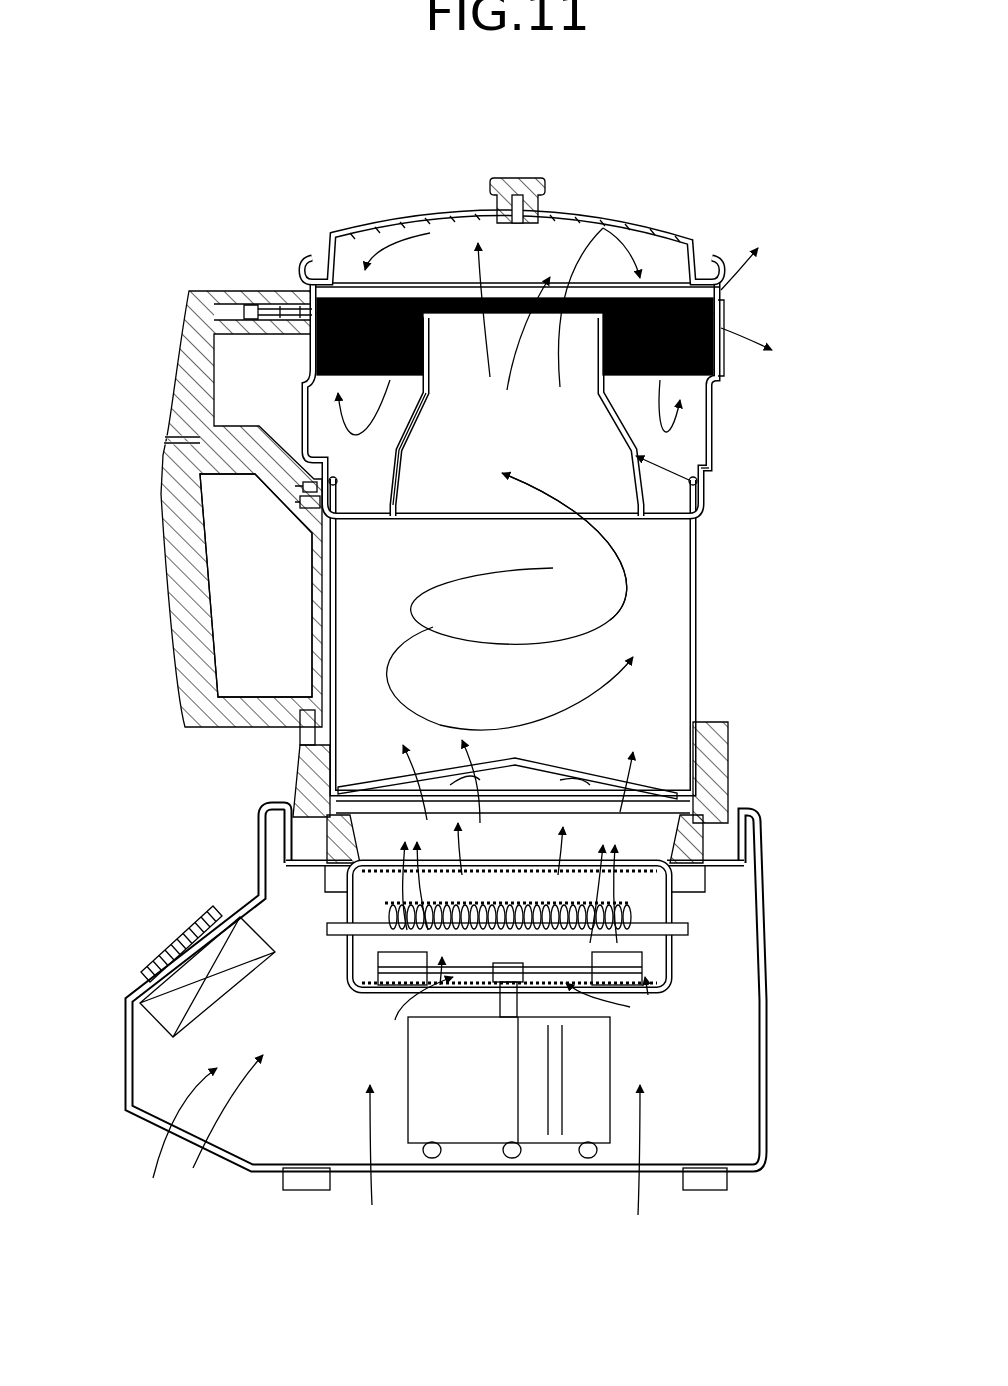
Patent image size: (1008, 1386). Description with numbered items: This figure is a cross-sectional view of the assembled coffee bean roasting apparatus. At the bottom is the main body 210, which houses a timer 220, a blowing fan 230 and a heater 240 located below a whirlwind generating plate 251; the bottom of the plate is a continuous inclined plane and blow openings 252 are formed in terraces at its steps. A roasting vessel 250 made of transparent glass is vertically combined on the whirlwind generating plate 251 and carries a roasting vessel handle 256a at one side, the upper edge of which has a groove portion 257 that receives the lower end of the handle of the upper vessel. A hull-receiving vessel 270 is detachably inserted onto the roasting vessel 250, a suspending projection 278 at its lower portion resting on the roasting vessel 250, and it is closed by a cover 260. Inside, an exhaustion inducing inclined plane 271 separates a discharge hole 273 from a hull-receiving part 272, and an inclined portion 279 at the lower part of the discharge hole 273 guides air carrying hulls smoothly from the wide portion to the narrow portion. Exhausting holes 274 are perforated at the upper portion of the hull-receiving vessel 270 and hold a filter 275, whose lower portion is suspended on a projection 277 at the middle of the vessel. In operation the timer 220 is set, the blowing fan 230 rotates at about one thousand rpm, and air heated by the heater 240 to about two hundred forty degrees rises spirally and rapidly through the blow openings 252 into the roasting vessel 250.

The main body 210 is at (765, 990).
The timer 220 is at (175, 943).
The blowing fan 230 is at (647, 960).
The heater 240 is at (412, 943).
The roasting vessel 250 is at (694, 622).
The whirlwind generating plate 251 is at (537, 767).
The blow openings 252 is at (613, 813).
The roasting vessel handle 256a is at (185, 650).
The groove portion 257 is at (180, 440).
The cover 260 is at (630, 212).
The hull-receiving vessel 270 is at (711, 443).
The exhaustion inducing inclined plane 271 is at (690, 482).
The hull-receiving part 272 is at (716, 336).
The discharge hole 273 is at (467, 343).
The exhausting holes 274 is at (302, 278).
The filter 275 is at (667, 300).
The projection 277 is at (392, 372).
The suspending projection 278 is at (707, 468).
The inclined portion 279 is at (392, 375).